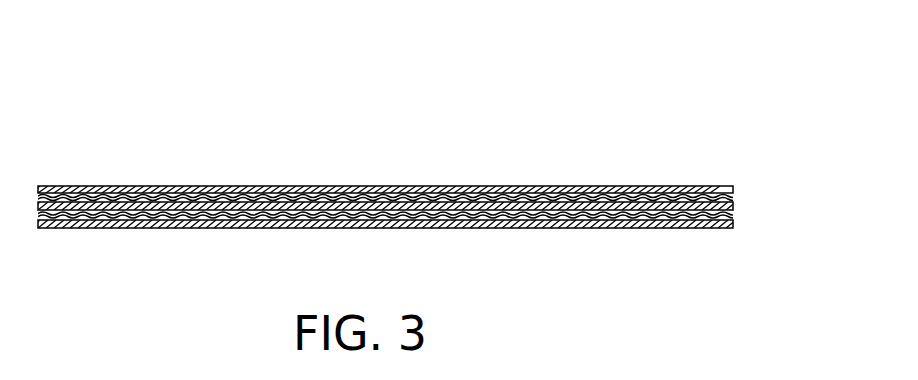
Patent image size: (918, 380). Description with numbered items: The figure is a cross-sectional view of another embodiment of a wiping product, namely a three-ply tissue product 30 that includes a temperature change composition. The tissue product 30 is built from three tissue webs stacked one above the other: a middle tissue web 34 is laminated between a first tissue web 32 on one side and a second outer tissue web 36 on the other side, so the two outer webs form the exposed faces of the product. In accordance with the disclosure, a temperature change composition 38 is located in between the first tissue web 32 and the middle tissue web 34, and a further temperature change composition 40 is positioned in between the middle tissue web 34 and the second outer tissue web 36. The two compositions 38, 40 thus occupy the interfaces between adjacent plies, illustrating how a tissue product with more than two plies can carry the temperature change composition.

The 3-ply tissue product 30 is at (440, 117).
The first tissue web 32 is at (697, 186).
The middle tissue web 34 is at (735, 207).
The second outer tissue web 36 is at (695, 228).
The temperature change composition 38 is at (735, 198).
The temperature change composition 40 is at (734, 213).